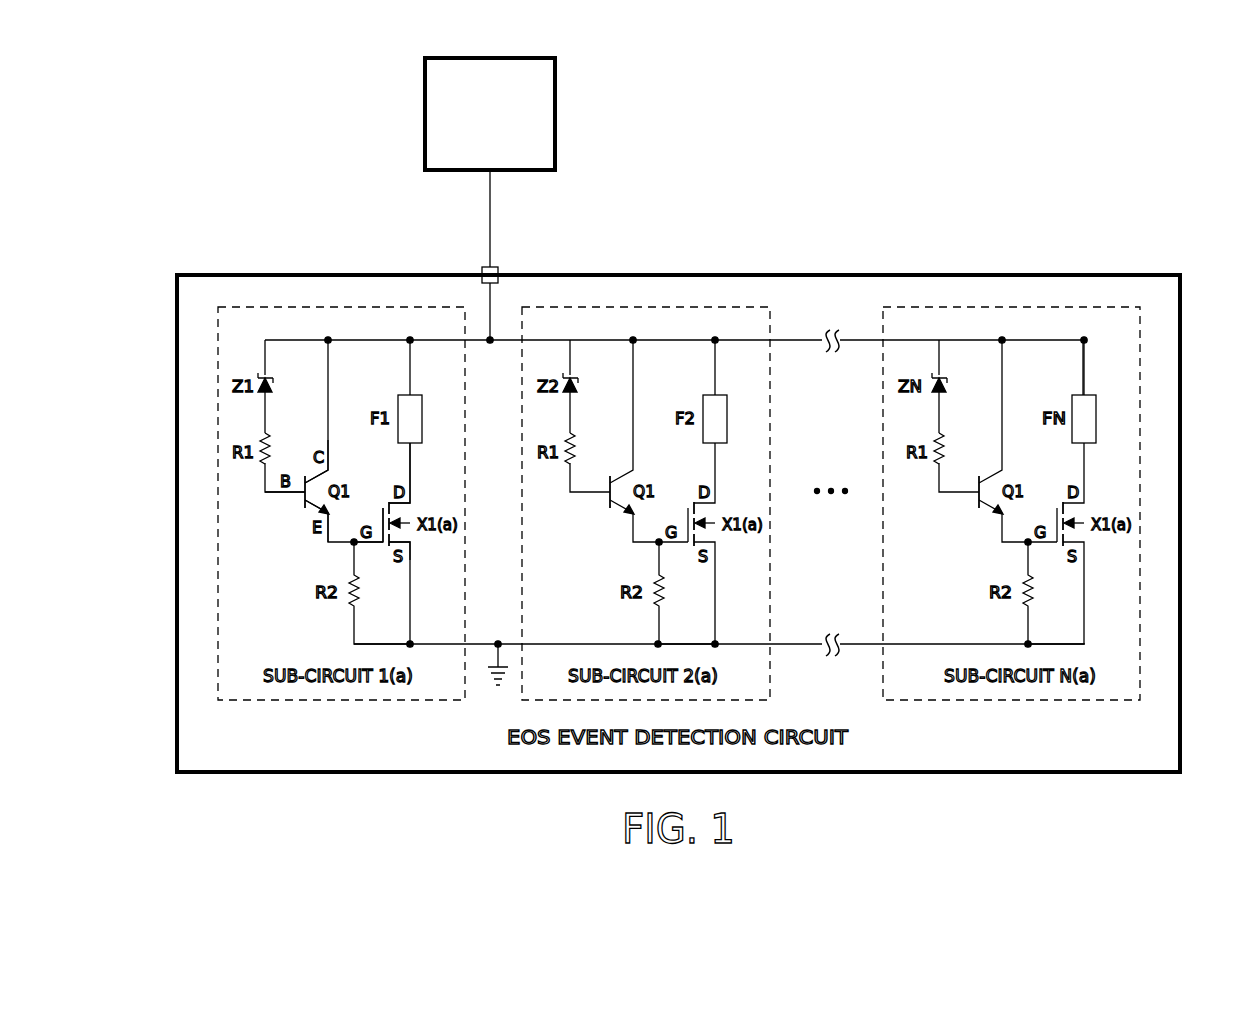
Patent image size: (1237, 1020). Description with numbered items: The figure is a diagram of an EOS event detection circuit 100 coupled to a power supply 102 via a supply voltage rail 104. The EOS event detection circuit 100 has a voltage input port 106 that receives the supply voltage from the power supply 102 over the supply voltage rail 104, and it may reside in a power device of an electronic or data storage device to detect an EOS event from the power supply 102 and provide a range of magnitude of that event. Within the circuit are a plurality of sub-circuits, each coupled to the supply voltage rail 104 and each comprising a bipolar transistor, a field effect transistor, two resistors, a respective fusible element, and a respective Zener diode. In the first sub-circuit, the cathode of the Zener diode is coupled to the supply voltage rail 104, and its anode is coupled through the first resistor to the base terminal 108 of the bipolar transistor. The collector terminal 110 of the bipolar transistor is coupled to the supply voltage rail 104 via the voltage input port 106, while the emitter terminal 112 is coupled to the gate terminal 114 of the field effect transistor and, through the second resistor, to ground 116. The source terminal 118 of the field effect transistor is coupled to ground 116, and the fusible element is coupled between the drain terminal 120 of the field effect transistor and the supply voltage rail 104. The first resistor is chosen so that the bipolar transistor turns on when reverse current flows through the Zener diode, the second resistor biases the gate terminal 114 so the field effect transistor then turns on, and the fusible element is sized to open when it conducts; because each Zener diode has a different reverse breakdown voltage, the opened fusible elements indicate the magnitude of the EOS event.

The EOS event detection circuit 100 is at (1194, 84).
The power supply 102 is at (555, 110).
The supply voltage rail 104 is at (490, 222).
The voltage input (VIN) port 106 is at (485, 266).
The base terminal of transistor Q1 108 is at (292, 493).
The collector terminal of transistor Q1 110 is at (315, 476).
The emitter terminal of transistor Q1 112 is at (312, 508).
The gate terminal of transistor X1(a) 114 is at (367, 545).
The ground 116 is at (494, 663).
The source terminal of transistor X1(a) 118 is at (410, 548).
The drain terminal of transistor X1(a) 120 is at (410, 500).